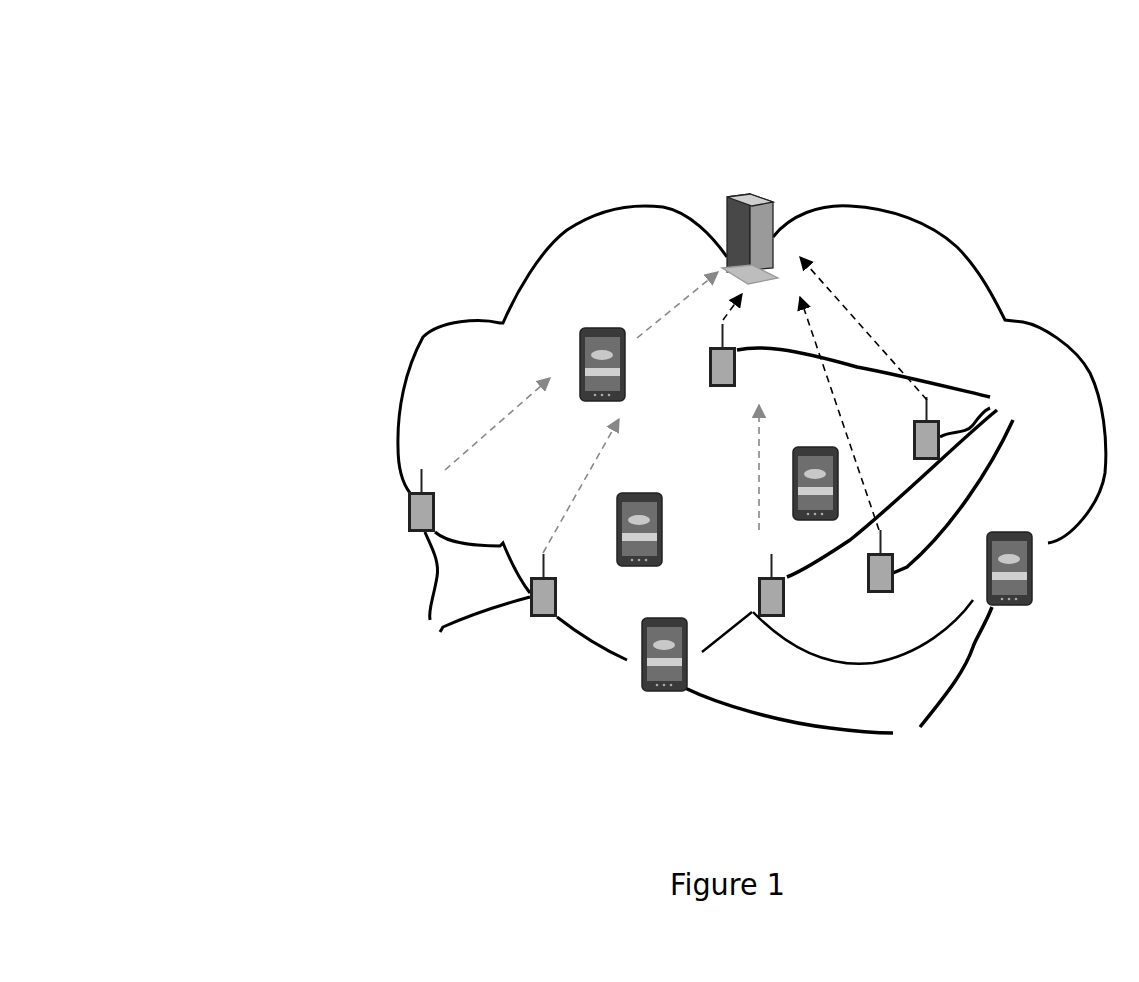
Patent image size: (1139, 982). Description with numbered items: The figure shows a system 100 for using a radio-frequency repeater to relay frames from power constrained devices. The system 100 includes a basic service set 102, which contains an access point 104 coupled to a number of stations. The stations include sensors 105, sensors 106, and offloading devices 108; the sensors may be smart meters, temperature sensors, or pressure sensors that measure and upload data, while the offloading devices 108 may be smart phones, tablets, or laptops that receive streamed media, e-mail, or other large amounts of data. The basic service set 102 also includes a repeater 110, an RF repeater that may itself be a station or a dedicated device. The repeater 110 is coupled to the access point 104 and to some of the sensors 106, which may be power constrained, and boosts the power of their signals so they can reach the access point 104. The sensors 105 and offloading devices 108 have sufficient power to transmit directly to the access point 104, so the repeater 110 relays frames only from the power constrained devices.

The system 100 is at (287, 129).
The basic service set 102 is at (957, 247).
The access point 104 is at (756, 193).
The sensors 105 is at (868, 470).
The sensors 106 is at (483, 558).
The offloading devices 108 is at (824, 599).
The repeater 110 is at (625, 377).